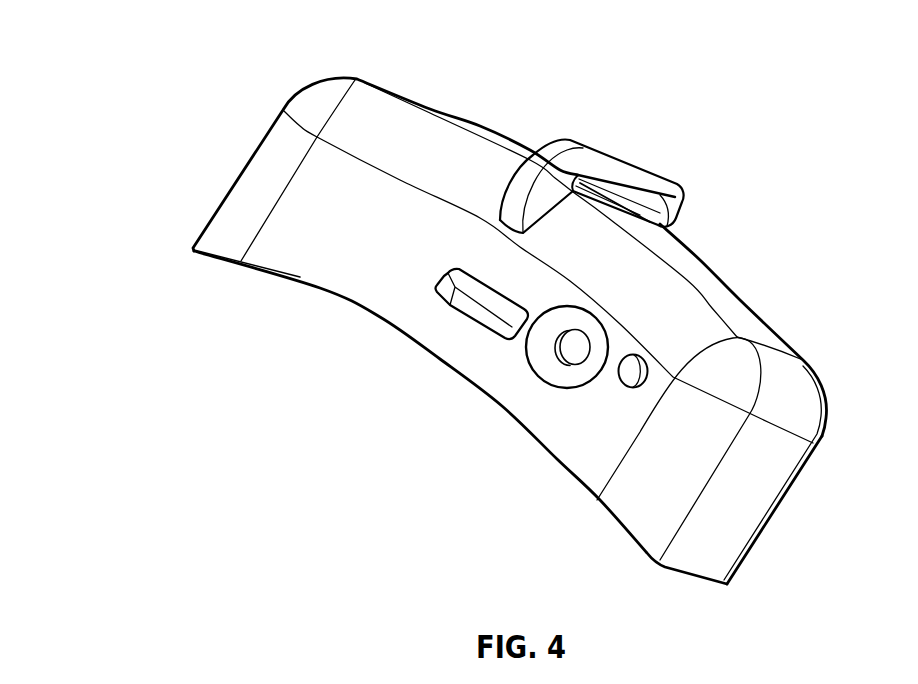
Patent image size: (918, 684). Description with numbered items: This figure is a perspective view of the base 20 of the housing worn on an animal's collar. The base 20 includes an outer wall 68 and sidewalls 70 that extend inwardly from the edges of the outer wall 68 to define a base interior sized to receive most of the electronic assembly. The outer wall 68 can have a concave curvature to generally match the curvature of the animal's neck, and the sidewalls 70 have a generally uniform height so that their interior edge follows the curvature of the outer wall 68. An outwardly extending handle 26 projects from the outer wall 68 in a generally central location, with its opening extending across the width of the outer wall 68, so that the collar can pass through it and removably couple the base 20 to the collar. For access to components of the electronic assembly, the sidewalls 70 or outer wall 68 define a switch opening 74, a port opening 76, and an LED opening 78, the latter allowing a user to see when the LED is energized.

The base 20 is at (174, 44).
The handle 26 is at (633, 163).
The outer wall 68 is at (750, 321).
The sidewalls 70 is at (745, 525).
The switch opening 74 is at (560, 353).
The port opening 76 is at (472, 324).
The LED opening 78 is at (618, 372).